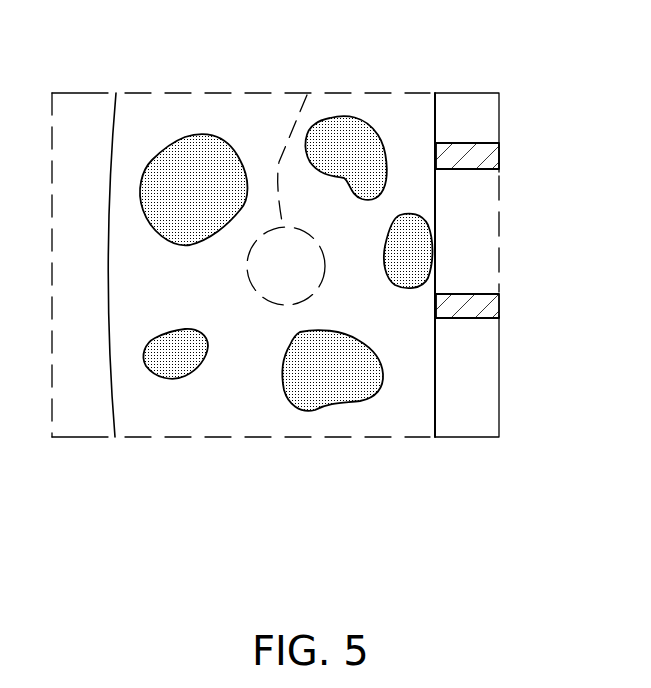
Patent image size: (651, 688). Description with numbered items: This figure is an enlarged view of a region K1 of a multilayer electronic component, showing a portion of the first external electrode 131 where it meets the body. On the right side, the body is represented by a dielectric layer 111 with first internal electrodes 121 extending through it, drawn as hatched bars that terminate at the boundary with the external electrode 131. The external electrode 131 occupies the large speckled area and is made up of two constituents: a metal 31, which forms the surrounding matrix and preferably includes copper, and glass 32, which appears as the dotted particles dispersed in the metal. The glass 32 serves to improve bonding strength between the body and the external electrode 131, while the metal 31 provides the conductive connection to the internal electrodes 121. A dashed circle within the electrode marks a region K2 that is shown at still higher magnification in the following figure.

The metal 31 is at (232, 395).
The glass 32 is at (335, 395).
The first external electrode 131 is at (346, 500).
The dielectric layer 111 is at (493, 228).
The first internal electrode 121 is at (493, 155).
The region K1 is at (301, 600).
The region K2 is at (308, 92).